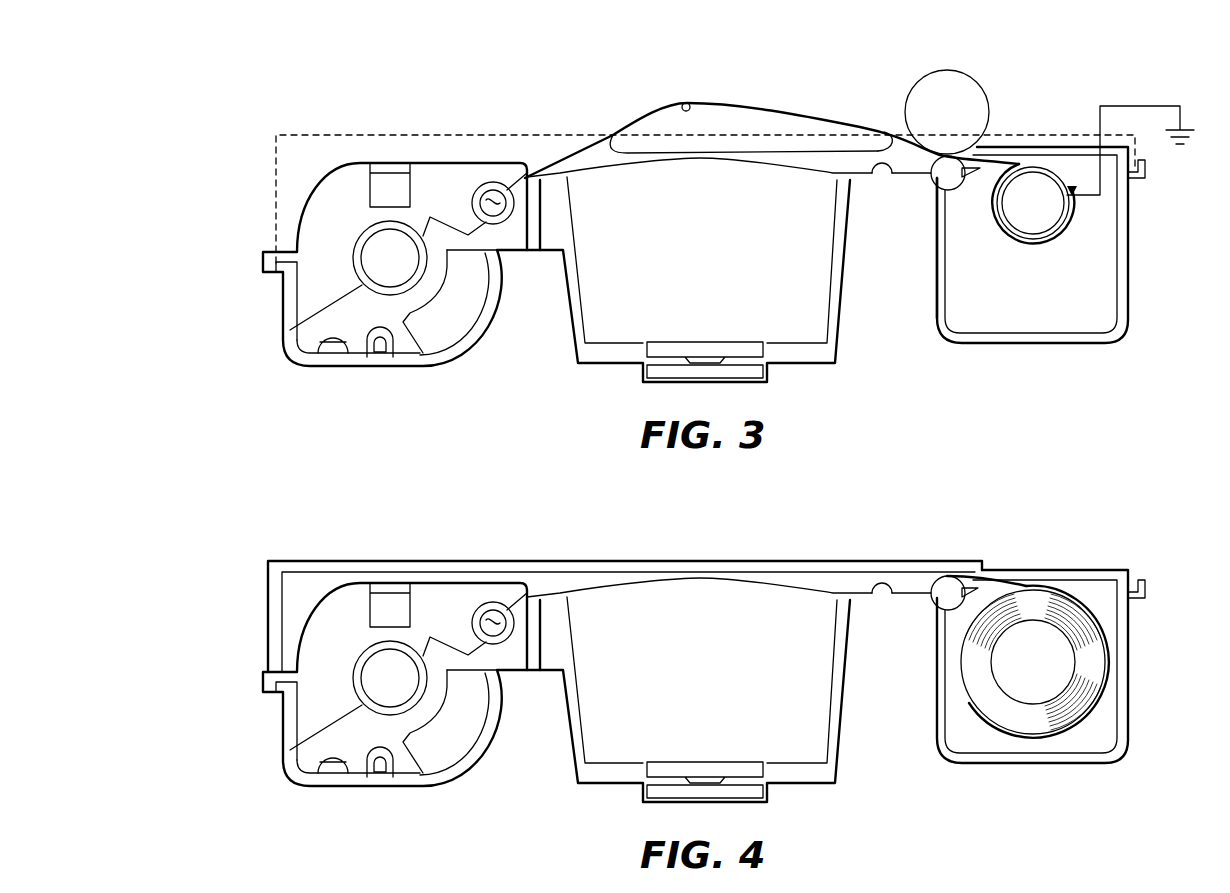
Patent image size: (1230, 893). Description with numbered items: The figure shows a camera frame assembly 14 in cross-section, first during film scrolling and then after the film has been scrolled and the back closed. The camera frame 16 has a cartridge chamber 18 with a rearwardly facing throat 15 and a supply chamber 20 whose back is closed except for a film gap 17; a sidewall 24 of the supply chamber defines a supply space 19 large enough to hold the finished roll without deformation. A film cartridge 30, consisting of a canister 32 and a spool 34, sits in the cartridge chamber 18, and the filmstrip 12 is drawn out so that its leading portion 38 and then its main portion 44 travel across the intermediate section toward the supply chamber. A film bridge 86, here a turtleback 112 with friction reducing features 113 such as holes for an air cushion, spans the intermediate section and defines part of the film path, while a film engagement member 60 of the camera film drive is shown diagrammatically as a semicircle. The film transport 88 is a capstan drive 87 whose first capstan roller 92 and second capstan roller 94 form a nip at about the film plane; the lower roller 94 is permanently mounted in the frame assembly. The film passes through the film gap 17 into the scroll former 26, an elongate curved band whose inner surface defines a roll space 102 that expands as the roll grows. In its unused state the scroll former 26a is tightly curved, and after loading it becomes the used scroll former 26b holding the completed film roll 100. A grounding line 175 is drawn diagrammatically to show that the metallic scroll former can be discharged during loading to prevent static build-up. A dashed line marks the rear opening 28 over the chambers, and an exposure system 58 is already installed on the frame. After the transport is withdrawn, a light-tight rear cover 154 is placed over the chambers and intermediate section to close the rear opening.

In FIG. 3, the filmstrip 12 is at (758, 139).
In FIG. 4, the filmstrip 12 is at (776, 562).
In FIG. 3, the main portion 44 is at (583, 150).
In FIG. 4, the main portion 44 is at (776, 562).
In FIG. 3, the camera frame assembly 14 is at (739, 296).
In FIG. 4, the camera frame assembly 14 is at (742, 716).
In FIG. 3, the camera frame 16 is at (739, 296).
In FIG. 4, the camera frame 16 is at (742, 716).
In FIG. 3, the throat 15 is at (388, 165).
In FIG. 3, the film gap 17 is at (987, 163).
In FIG. 3, the cartridge chamber 18 is at (300, 288).
In FIG. 4, the cartridge chamber 18 is at (266, 721).
In FIG. 3, the supply space 19 is at (1086, 277).
In FIG. 3, the supply chamber 20 is at (1029, 270).
In FIG. 4, the supply chamber 20 is at (1046, 694).
In FIG. 3, the sidewall 24 is at (942, 287).
In FIG. 3, the scroll former 26 is at (1111, 210).
In FIG. 4, the scroll former 26 is at (1078, 694).
In FIG. 3, the unused scroll former 26a is at (1070, 223).
In FIG. 4, the used scroll former 26b is at (1078, 694).
In FIG. 3, the rear opening 28 is at (276, 152).
In FIG. 3, the film cartridge 30 is at (379, 209).
In FIG. 4, the film cartridge 30 is at (379, 630).
In FIG. 3, the canister 32 is at (379, 209).
In FIG. 4, the canister 32 is at (379, 630).
In FIG. 3, the spool 34 is at (292, 334).
In FIG. 4, the spool 34 is at (290, 744).
In FIG. 3, the leading portion 38 is at (893, 131).
In FIG. 3, the exposure system 58 is at (644, 377).
In FIG. 4, the exposure system 58 is at (655, 799).
In FIG. 3, the film engagement member 60 is at (878, 160).
In FIG. 3, the film bridge 86 is at (752, 87).
In FIG. 3, the turtleback 112 is at (752, 87).
In FIG. 3, the capstan drive 87 is at (983, 88).
In FIG. 3, the film transport 88 is at (983, 88).
In FIG. 3, the first capstan roller 92 is at (940, 70).
In FIG. 3, the second capstan roller 94 is at (958, 192).
In FIG. 4, the film roll 100 is at (1033, 662).
In FIG. 4, the roll space 102 is at (1080, 662).
In FIG. 3, the friction reducing features 113 is at (720, 86).
In FIG. 4, the rear cover 154 is at (616, 595).
In FIG. 3, the grounding line 175 is at (1143, 106).